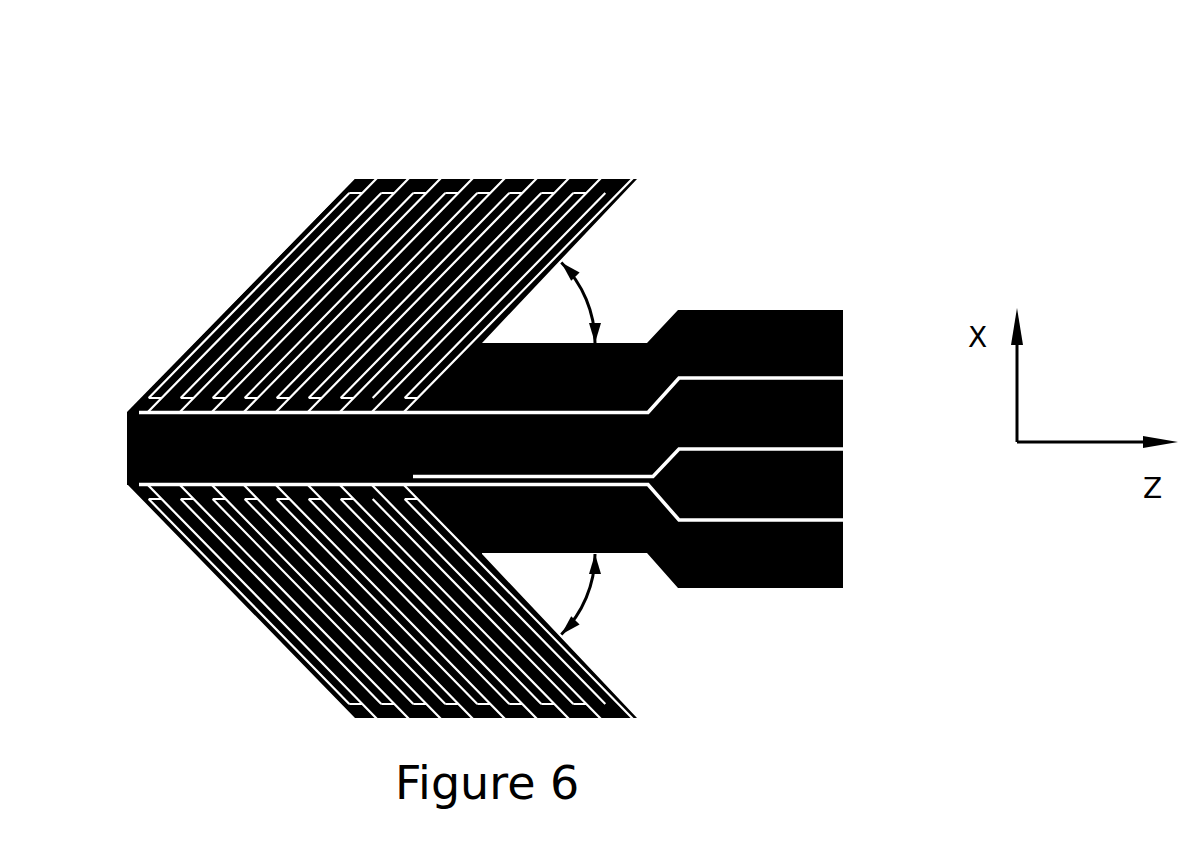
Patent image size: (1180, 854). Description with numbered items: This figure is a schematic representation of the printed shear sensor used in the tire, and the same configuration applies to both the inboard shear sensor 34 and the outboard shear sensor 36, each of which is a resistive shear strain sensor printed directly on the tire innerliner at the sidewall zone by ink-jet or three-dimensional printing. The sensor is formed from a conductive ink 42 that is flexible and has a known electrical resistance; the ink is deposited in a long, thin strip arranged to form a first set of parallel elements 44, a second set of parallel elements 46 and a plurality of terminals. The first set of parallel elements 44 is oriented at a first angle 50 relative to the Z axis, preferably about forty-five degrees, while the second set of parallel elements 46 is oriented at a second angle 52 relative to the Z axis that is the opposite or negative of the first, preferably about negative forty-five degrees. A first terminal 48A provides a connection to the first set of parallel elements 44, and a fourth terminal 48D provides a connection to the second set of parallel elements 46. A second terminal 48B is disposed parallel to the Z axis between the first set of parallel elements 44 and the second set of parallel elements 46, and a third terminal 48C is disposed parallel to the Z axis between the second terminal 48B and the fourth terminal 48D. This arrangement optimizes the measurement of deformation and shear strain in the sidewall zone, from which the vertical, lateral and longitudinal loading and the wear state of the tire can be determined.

The inboard shear sensor 34 is at (542, 375).
The outboard shear sensor 36 is at (542, 375).
The conductive ink 42 is at (367, 178).
The first set of parallel elements 44 is at (256, 281).
The second set of parallel elements 46 is at (265, 627).
The first terminal 48A is at (800, 310).
The second terminal 48B is at (843, 412).
The third terminal 48C is at (843, 480).
The fourth terminal 48D is at (843, 553).
The first angle 50 is at (588, 298).
The second angle 52 is at (588, 600).